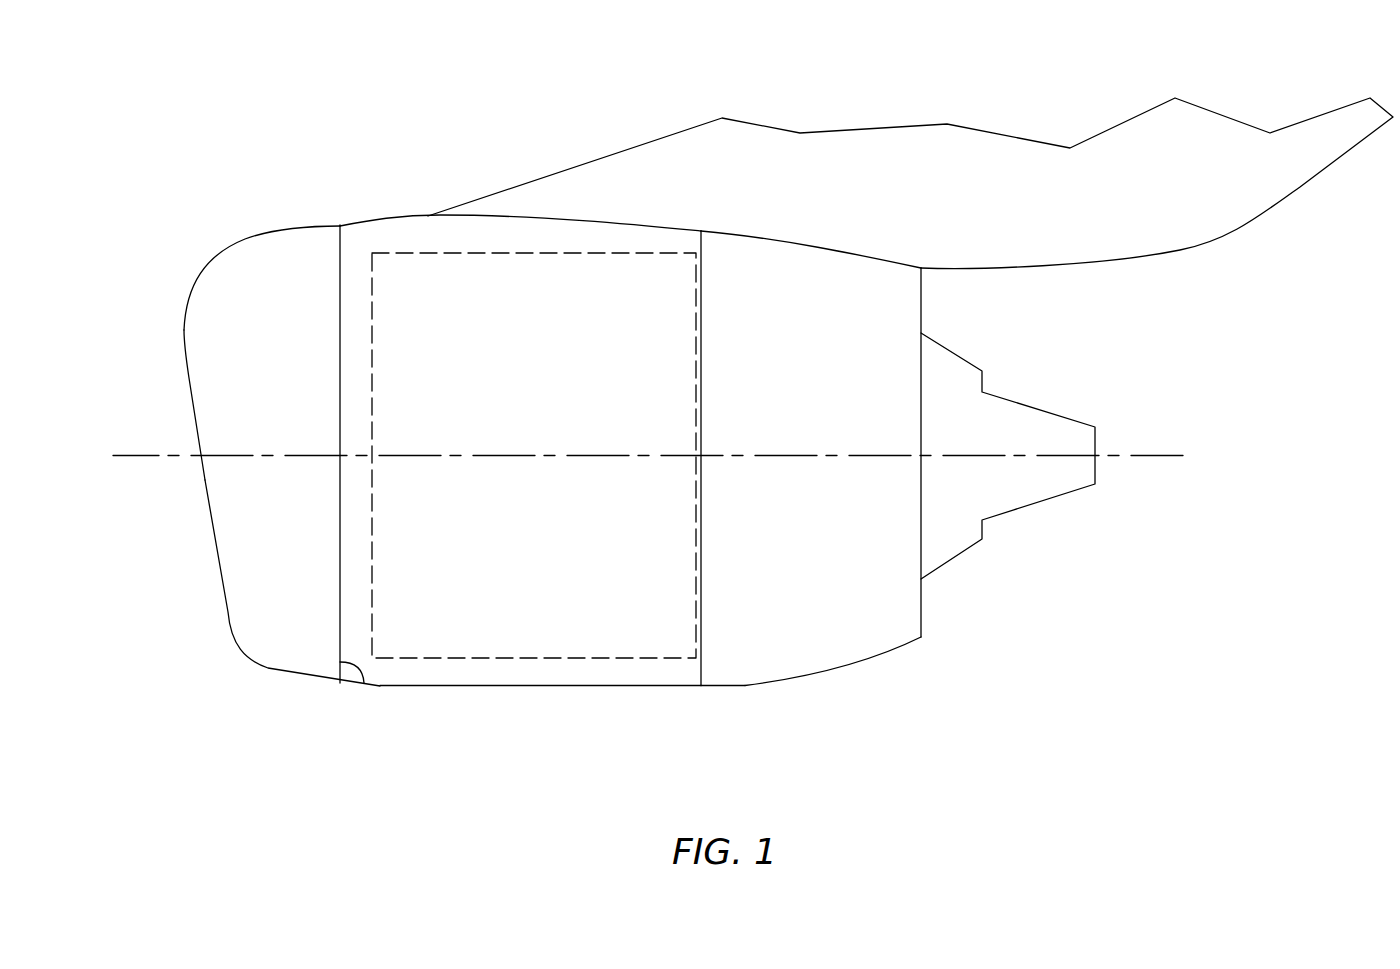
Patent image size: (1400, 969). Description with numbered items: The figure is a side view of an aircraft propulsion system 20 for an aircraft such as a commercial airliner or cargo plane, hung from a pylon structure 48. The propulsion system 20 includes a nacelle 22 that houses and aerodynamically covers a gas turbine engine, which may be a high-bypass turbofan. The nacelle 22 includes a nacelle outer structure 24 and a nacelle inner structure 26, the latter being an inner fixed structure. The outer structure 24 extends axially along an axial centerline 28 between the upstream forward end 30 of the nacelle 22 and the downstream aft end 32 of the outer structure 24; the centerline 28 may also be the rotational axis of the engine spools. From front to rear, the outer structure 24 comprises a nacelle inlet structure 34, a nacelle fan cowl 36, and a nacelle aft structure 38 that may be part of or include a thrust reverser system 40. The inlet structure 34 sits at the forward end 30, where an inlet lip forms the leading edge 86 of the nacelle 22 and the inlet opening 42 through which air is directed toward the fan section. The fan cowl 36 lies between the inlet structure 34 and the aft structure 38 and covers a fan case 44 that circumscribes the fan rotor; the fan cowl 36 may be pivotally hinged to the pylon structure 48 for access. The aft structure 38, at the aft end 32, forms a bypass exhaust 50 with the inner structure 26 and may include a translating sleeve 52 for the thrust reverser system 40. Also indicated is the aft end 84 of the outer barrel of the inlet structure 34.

The aircraft propulsion system 20 is at (207, 73).
The nacelle 22 is at (266, 231).
The nacelle outer structure 24 is at (399, 212).
The nacelle inner structure 26 is at (963, 557).
The axial centerline 28 is at (132, 456).
The forward end 30 is at (183, 327).
The leading edge 86 is at (262, 278).
The aft end 32 is at (920, 297).
The nacelle inlet structure 34 is at (183, 384).
The nacelle fan cowl 36 is at (462, 696).
The nacelle aft structure 38 is at (815, 686).
The thrust reverser system 40 is at (811, 458).
The inlet opening 42 is at (211, 533).
The fan case 44 is at (535, 660).
The pylon structure 48 is at (571, 167).
The bypass exhaust 50 is at (927, 623).
The translating sleeve 52 is at (745, 686).
The aft end of the outer barrel 84 is at (363, 684).